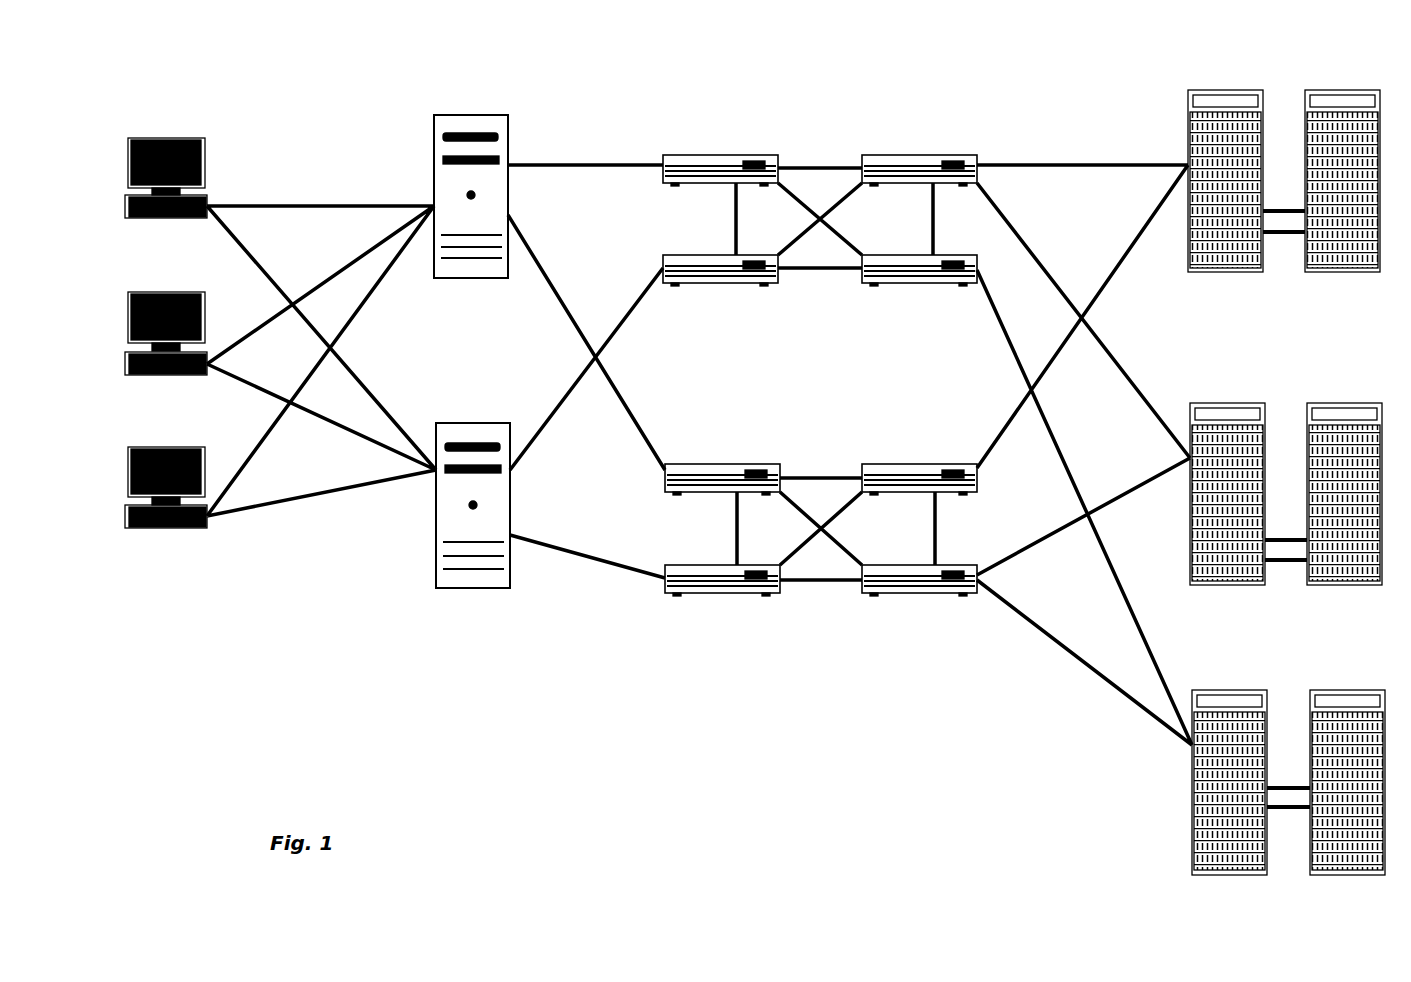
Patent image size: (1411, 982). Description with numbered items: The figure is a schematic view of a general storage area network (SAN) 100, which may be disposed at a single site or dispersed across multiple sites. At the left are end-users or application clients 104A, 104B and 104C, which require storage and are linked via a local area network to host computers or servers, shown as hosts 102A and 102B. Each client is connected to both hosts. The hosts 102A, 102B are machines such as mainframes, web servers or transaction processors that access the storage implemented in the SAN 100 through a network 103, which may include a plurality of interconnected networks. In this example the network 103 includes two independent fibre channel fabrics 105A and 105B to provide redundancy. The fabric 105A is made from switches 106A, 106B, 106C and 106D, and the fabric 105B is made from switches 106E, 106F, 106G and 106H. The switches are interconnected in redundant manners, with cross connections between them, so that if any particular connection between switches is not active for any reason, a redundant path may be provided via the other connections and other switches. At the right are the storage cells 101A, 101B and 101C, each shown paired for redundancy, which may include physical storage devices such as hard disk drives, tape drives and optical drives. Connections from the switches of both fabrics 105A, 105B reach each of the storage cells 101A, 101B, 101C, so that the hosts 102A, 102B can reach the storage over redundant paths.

The storage area network 100 is at (650, 48).
The storage cell 101A is at (1238, 272).
The storage cell 101B is at (1245, 585).
The storage cell 101C is at (1247, 875).
The host 102A is at (450, 113).
The host 102B is at (452, 423).
The network 103 is at (882, 104).
The end-user/client 104A is at (178, 137).
The end-user/client 104B is at (175, 292).
The end-user/client 104C is at (190, 447).
The fibre channel fabric 105A is at (826, 296).
The fibre channel fabric 105B is at (822, 452).
The switch 106A is at (668, 155).
The switch 106B is at (680, 255).
The switch 106C is at (955, 155).
The switch 106D is at (925, 255).
The switch 106E is at (690, 463).
The switch 106F is at (690, 565).
The switch 106G is at (925, 492).
The switch 106H is at (860, 593).